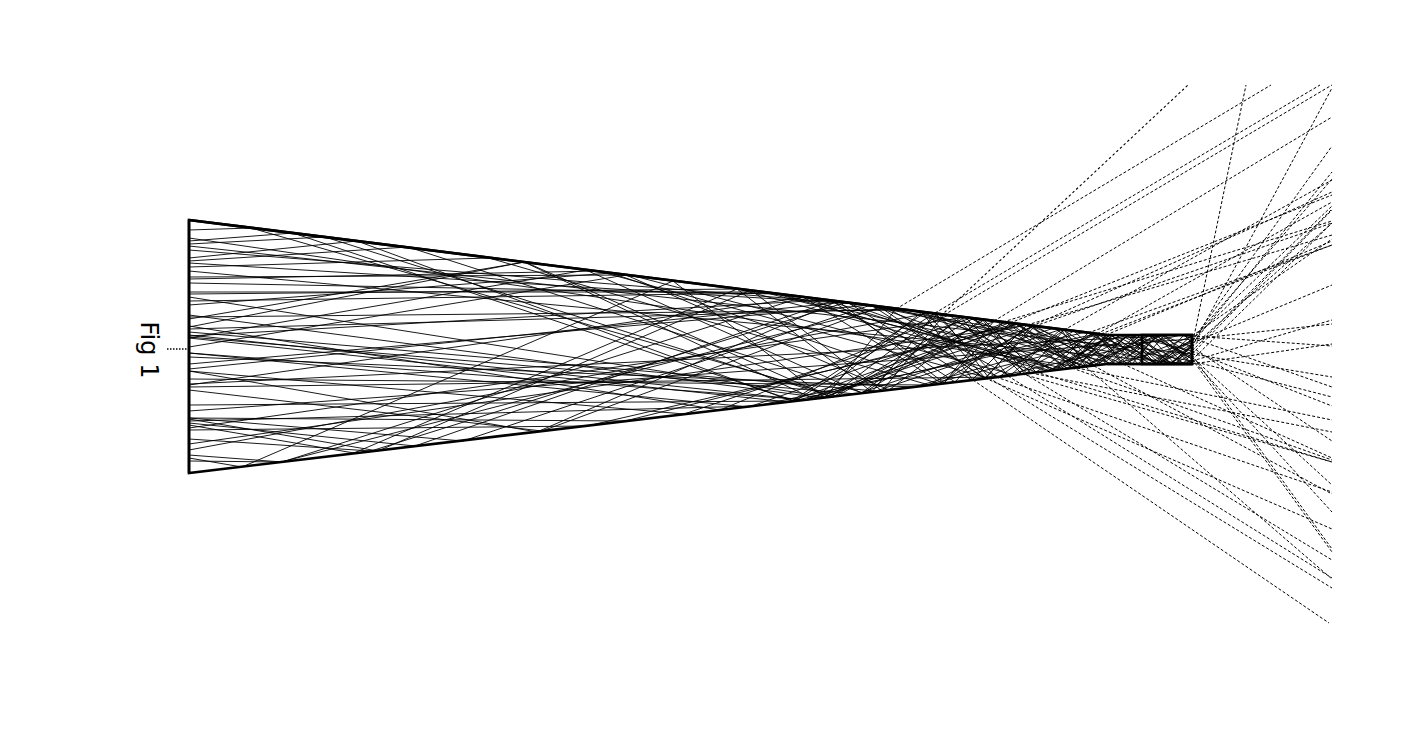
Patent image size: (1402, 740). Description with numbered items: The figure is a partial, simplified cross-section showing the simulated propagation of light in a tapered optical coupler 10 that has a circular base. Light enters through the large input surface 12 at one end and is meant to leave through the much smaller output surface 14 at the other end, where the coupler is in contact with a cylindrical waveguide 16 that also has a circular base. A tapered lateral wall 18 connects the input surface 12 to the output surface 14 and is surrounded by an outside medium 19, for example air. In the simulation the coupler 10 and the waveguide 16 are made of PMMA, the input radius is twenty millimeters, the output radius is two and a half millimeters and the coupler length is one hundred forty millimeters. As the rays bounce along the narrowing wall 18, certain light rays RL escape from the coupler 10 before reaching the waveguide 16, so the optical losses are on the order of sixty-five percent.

The tapered optical coupler 10 is at (500, 158).
The input surface 12 is at (189, 258).
The output surface 14 is at (1143, 365).
The cylindrical waveguide 16 is at (1172, 335).
The tapered lateral wall 18 is at (806, 291).
The outside medium 19 is at (712, 159).
The light rays RL is at (1107, 168).